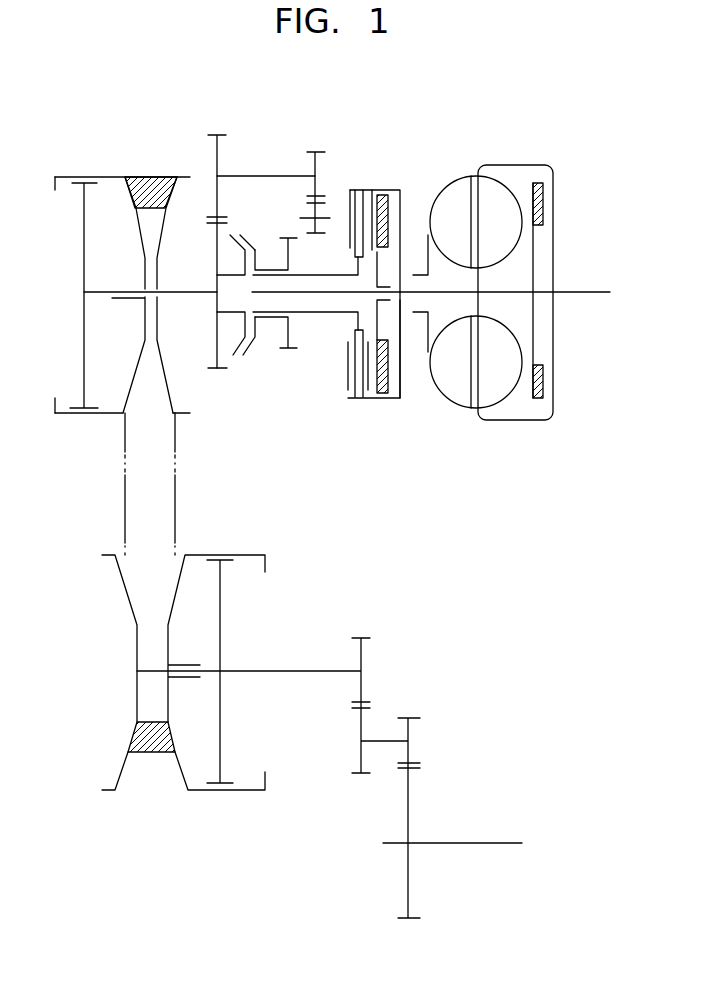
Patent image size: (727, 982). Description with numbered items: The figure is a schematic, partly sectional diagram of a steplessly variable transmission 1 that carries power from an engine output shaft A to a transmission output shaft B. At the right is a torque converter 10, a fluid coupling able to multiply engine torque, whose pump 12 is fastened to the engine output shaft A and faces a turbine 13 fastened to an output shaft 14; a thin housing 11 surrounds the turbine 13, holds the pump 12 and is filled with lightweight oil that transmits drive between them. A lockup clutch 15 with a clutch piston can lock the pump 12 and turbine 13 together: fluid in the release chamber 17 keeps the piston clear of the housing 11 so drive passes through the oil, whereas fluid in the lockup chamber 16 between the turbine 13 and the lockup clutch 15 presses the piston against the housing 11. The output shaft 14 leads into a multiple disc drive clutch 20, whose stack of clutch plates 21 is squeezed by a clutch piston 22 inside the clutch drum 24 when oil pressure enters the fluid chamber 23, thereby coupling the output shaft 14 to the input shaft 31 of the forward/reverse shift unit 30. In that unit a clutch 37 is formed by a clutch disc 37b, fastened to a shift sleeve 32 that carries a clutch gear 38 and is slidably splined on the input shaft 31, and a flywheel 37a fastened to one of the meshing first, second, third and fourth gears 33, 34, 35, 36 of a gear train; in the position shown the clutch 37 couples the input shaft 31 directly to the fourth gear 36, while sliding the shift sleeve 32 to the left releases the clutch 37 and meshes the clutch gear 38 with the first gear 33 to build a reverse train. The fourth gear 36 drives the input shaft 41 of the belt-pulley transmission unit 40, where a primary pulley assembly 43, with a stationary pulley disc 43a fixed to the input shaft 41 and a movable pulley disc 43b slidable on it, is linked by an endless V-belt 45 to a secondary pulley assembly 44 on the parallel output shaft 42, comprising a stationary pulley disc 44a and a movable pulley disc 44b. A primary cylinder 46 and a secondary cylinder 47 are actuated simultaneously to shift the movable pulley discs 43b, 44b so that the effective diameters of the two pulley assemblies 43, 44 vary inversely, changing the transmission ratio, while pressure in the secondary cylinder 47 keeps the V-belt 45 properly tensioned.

The steplessly variable transmission 1 is at (524, 235).
The torque converter 10 is at (524, 261).
The housing 11 is at (518, 163).
The pump 12 is at (452, 180).
The turbine 13 is at (488, 182).
The output shaft 14 is at (417, 291).
The lockup clutch 15 is at (545, 201).
The lockup chamber 16 is at (524, 340).
The release chamber 17 is at (553, 323).
The drive clutch 20 is at (383, 292).
The clutch plates 21 is at (347, 372).
The clutch piston 22 is at (381, 397).
The fluid chamber 23 is at (395, 377).
The clutch drum 24 is at (363, 188).
The forward/reverse shift unit 30 is at (276, 238).
The input shaft 31 is at (318, 315).
The shift sleeve 32 is at (268, 320).
The first gear 33 is at (308, 203).
The second gear 34 is at (313, 150).
The third gear 35 is at (217, 132).
The fourth gear 36 is at (215, 368).
The clutch 37 is at (248, 366).
The flywheel 37a is at (237, 373).
The clutch disc 37b is at (250, 349).
The clutch gear 38 is at (288, 236).
The belt-pulley transmission unit 40 is at (135, 253).
The input shaft 41 is at (185, 297).
The output shaft 42 is at (272, 668).
The primary pulley assembly 43 is at (135, 262).
The stationary pulley disc 43a is at (155, 259).
The movable pulley disc 43b is at (142, 262).
The secondary pulley assembly 44 is at (167, 709).
The stationary pulley disc 44a is at (135, 648).
The movable pulley disc 44b is at (192, 632).
The V-belt 45 is at (143, 190).
The primary cylinder 46 is at (84, 347).
The secondary cylinder 47 is at (213, 723).
The engine output shaft A is at (605, 242).
The transmission output shaft B is at (478, 842).